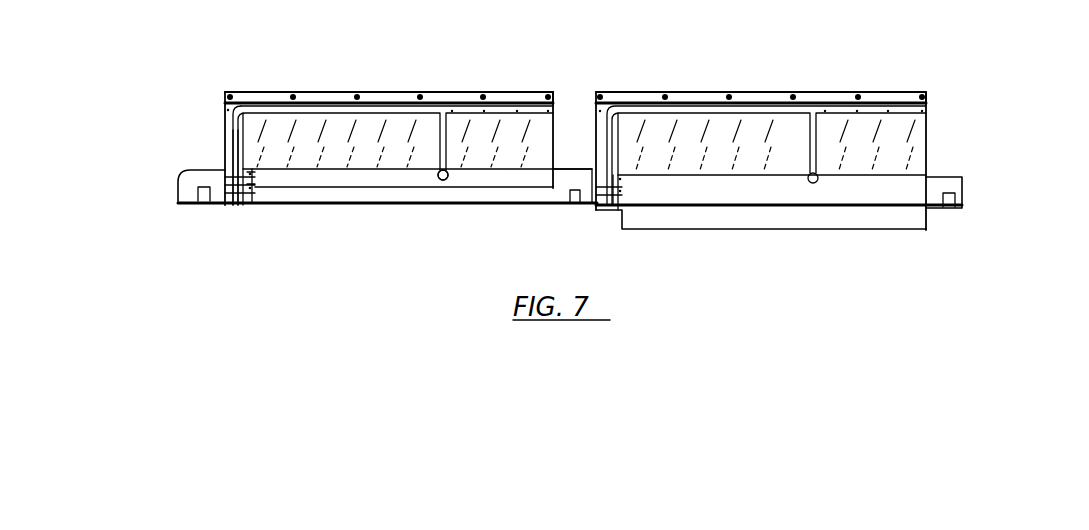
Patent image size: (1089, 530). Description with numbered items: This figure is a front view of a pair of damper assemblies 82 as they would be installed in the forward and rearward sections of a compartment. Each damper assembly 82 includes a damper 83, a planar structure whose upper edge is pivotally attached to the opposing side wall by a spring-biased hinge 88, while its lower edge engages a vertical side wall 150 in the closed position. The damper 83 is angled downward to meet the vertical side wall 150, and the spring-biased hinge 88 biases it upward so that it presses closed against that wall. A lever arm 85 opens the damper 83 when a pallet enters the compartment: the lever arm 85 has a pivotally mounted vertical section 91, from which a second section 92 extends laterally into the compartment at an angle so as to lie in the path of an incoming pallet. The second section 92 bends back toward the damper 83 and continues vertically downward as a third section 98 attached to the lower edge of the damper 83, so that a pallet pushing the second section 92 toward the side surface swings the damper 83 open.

The damper assembly 82 is at (295, 234).
The damper 83 is at (388, 150).
The lever arm 85 is at (271, 92).
The spring-biased hinge 88 is at (443, 105).
The vertical section 91 is at (237, 143).
The second section 92 is at (352, 92).
The third section 98 is at (450, 146).
The vertical side wall 150 is at (190, 178).